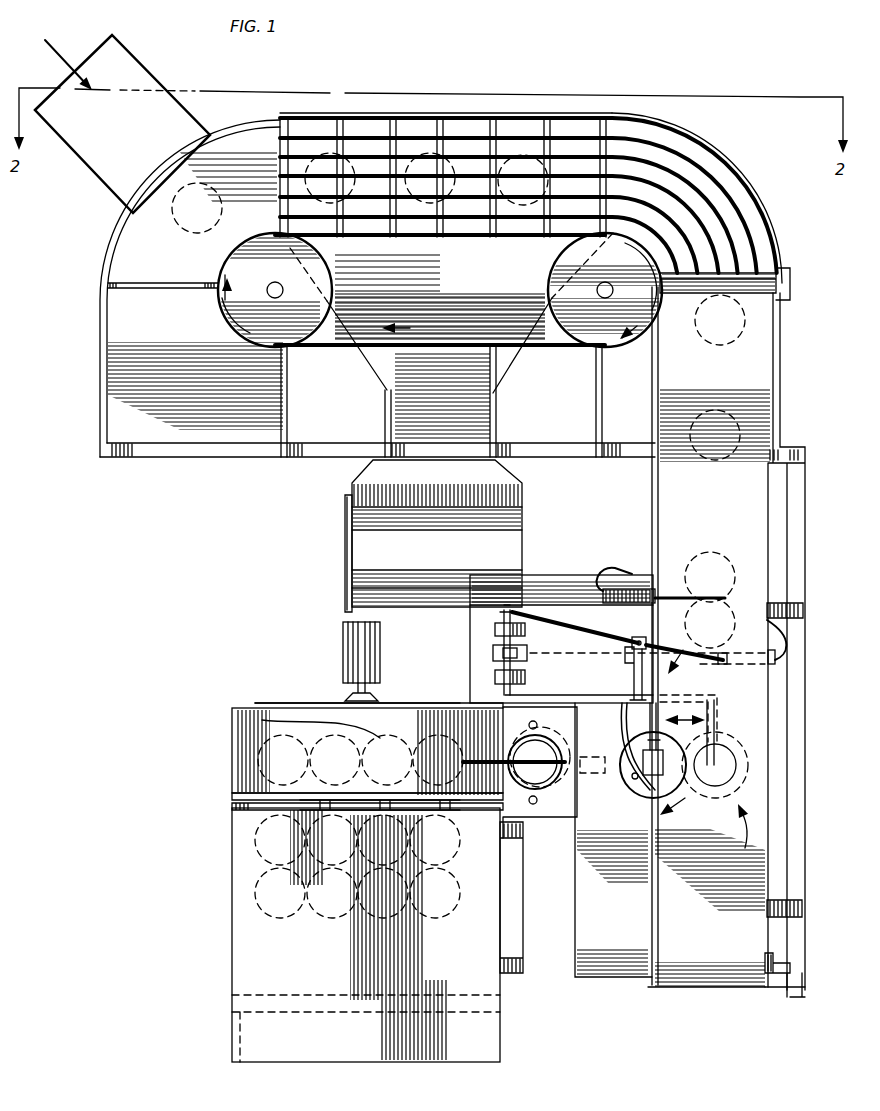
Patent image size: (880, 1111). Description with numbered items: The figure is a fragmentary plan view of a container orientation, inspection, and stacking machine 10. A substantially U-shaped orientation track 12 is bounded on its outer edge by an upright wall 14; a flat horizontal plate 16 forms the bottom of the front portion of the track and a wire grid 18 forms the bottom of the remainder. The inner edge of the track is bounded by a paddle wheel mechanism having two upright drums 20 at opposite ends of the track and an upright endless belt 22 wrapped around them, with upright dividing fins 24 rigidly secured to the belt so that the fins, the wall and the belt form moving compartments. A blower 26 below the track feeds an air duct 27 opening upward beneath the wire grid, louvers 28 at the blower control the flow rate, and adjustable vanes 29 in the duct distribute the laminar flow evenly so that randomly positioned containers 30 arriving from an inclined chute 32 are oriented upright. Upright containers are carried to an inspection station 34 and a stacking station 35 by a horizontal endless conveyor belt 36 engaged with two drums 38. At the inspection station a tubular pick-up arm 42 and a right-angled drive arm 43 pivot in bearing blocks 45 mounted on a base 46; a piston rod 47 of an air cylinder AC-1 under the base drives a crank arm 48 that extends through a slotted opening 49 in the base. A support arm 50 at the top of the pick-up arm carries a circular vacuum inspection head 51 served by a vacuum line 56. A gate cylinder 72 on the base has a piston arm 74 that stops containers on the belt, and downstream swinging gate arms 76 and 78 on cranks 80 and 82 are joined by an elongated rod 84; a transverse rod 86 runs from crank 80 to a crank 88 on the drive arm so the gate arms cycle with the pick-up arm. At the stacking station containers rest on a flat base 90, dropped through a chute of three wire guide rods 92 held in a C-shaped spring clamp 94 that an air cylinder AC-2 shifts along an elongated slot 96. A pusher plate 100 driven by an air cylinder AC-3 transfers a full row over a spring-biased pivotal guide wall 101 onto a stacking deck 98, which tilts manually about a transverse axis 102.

The container orientation, inspection, and stacking machine 10 is at (794, 334).
The orientation track 12 is at (466, 126).
The upright wall 14 is at (690, 137).
The flat horizontal plate 16 is at (135, 262).
The wire grid 18 is at (452, 117).
The upright drums 20 is at (334, 300).
The upright endless belt 22 is at (345, 240).
The dividing fins 24 is at (140, 290).
The blower 26 is at (522, 536).
The air duct 27 is at (510, 388).
The louvers 28 is at (350, 568).
The adjustable vanes 29 is at (340, 130).
The containers 30 is at (210, 197).
The inclined chute 32 is at (160, 94).
The inspection station 34 is at (670, 845).
The stacking station 35 is at (450, 805).
The endless conveyor belt 36 is at (760, 423).
The drums 38 is at (790, 290).
The pick-up arm 42 is at (560, 697).
The drive arm 43 is at (528, 618).
The bearing blocks 45 is at (495, 629).
The base 46 is at (522, 598).
The piston rod 47 is at (540, 655).
The crank arm 48 is at (517, 655).
The slotted opening 49 is at (493, 653).
The support arm 50 is at (665, 726).
The inspection head 51 is at (700, 750).
The vacuum line 56 is at (626, 724).
The gate cylinder 72 is at (640, 589).
The piston arm 74 is at (668, 596).
The swinging gate arm 76 is at (726, 666).
The swinging gate arm 78 is at (705, 795).
The crank 80 is at (639, 637).
The crank 82 is at (606, 792).
The elongated rod 84 is at (634, 675).
The transverse rod 86 is at (512, 612).
The crank 88 is at (504, 618).
The flat base 90 is at (350, 716).
The wire guide rods 92 is at (529, 725).
The spring clamp 94 is at (526, 794).
The elongated slot 96 is at (514, 747).
The stacking deck 98 is at (245, 955).
The pusher plate 100 is at (426, 705).
The guide wall 101 is at (246, 812).
The transverse axis 102 is at (245, 1060).
The air cylinder AC-1 is at (776, 660).
The air cylinder AC-2 is at (642, 761).
The air cylinder AC-3 is at (343, 658).